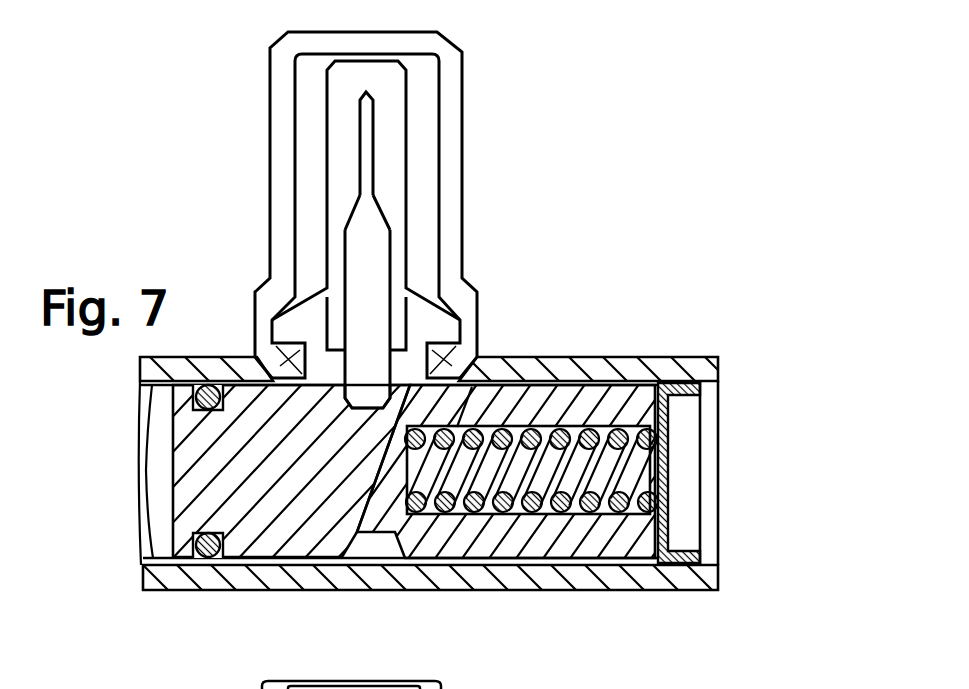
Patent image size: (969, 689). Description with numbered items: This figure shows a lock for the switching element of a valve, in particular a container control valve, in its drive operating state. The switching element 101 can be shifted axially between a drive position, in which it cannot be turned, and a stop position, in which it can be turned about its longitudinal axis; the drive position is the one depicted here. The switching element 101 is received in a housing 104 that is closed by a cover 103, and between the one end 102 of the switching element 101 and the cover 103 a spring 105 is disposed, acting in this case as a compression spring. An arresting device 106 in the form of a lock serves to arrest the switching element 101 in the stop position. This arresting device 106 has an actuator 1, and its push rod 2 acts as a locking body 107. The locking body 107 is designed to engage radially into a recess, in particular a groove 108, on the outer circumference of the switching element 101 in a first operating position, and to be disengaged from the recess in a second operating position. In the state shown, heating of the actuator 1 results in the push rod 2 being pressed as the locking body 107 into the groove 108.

The actuator 1 is at (362, 208).
The push rod 2 is at (311, 234).
The switching element 101 is at (568, 403).
The end of switching element 102 is at (478, 415).
The cover 103 is at (672, 393).
The housing 104 is at (600, 581).
The spring 105 is at (483, 500).
The arresting device 106 is at (432, 27).
The locking body 107 is at (372, 245).
The groove 108 is at (367, 540).